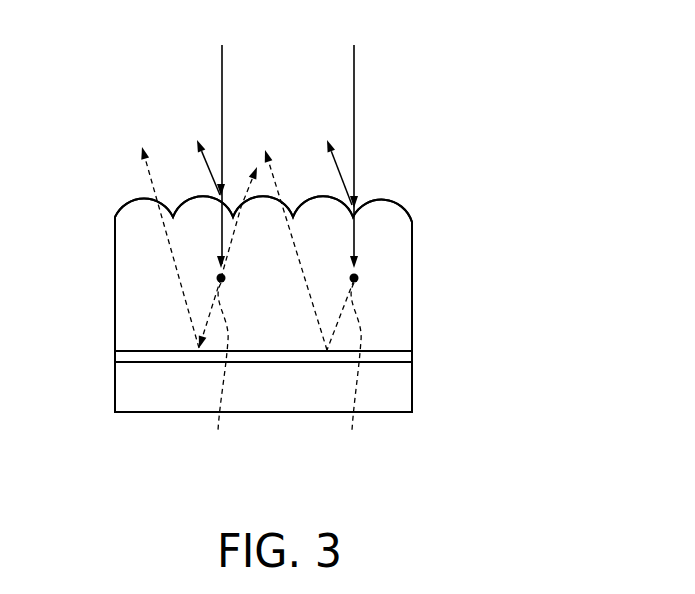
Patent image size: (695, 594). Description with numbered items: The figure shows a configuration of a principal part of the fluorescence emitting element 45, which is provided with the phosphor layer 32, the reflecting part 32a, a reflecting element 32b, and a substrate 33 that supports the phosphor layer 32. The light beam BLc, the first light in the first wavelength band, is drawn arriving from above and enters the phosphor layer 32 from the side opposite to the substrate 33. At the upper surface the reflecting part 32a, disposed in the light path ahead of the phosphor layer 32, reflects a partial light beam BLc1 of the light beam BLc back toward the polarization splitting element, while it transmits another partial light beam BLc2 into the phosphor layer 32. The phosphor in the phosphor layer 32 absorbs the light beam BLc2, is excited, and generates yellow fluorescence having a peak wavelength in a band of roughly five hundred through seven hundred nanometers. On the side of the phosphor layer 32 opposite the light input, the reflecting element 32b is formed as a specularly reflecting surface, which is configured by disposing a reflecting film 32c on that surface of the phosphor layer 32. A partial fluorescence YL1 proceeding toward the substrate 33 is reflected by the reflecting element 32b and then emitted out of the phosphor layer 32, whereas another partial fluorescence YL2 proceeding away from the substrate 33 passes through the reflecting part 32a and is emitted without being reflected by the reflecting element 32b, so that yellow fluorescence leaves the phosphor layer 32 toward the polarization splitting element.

The fluorescence emitting element 45 is at (92, 183).
The phosphor layer 32 is at (397, 265).
The reflecting part 32a is at (393, 207).
The reflecting element 32b is at (387, 352).
The reflecting film 32c is at (137, 355).
The substrate 33 is at (397, 380).
The light beam BLc is at (222, 80).
The partial light beam BLc1 is at (207, 169).
The partial light beam BLc2 is at (218, 237).
The partial fluorescence YL1 is at (283, 375).
The partial fluorescence YL2 is at (274, 224).